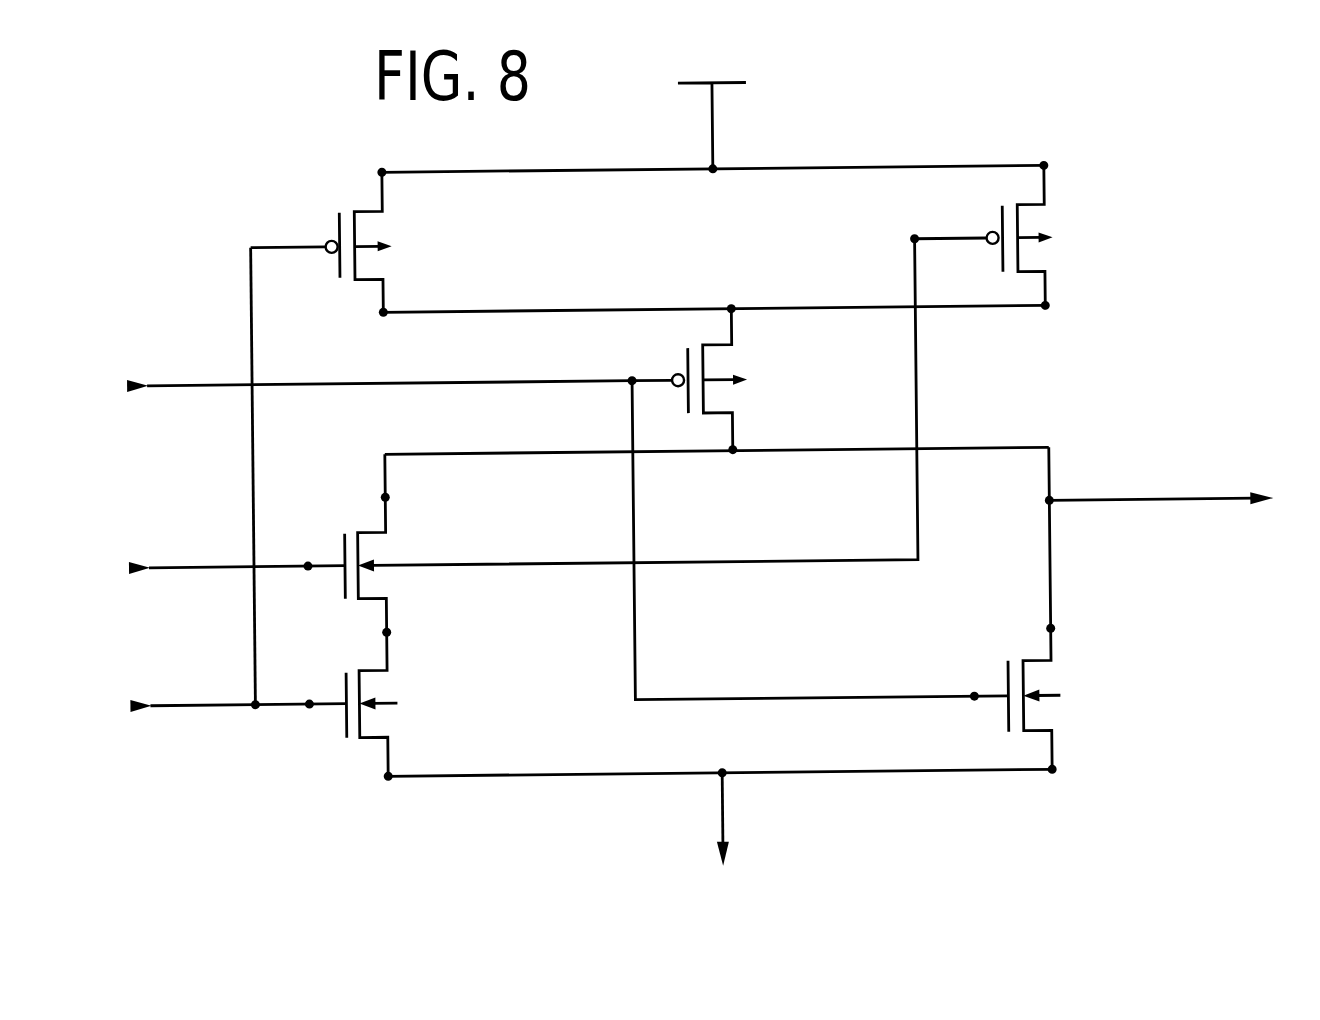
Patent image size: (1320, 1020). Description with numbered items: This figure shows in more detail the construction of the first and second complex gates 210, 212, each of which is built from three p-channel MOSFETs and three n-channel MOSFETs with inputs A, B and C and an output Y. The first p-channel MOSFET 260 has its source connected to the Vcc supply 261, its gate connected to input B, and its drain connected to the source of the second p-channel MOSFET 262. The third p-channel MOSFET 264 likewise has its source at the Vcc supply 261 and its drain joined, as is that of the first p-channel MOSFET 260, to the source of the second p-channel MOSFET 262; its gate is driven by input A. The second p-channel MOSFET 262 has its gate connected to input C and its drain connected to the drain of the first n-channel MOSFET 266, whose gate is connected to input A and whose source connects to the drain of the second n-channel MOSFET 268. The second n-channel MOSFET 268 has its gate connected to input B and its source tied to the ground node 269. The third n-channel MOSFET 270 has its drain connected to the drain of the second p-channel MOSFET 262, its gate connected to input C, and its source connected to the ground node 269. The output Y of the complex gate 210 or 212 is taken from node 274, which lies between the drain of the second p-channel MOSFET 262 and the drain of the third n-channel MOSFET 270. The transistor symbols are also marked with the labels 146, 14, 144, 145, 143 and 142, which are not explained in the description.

The first complex gate 210 is at (1118, 130).
The second complex gate 212 is at (700, 451).
The first p-channel MOSFET 260 is at (373, 193).
The Vcc supply 261 is at (720, 83).
The second p-channel MOSFET 262 is at (735, 353).
The third p-channel MOSFET 264 is at (1063, 213).
The first n-channel MOSFET 266 is at (367, 519).
The second n-channel MOSFET 268 is at (374, 744).
The ground node 269 is at (720, 798).
The third n-channel MOSFET 270 is at (1062, 737).
The node 274 is at (1052, 477).
The transistor 146 is at (329, 251).
The transistor 14 is at (995, 246).
The transistor 144 is at (689, 379).
The transistor 145 is at (365, 548).
The transistor 143 is at (362, 723).
The transistor 142 is at (1016, 652).